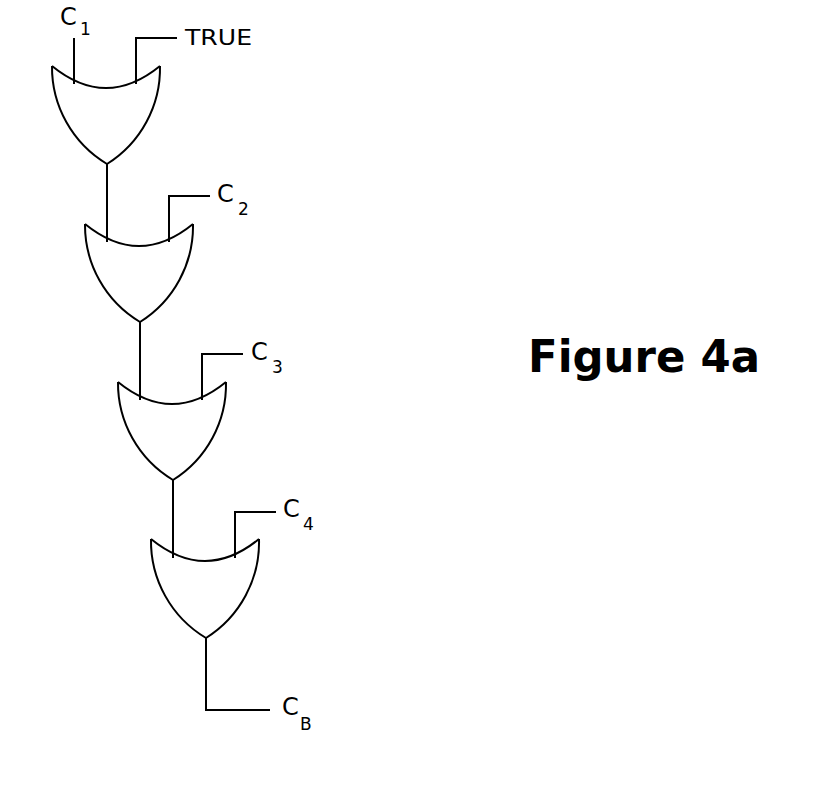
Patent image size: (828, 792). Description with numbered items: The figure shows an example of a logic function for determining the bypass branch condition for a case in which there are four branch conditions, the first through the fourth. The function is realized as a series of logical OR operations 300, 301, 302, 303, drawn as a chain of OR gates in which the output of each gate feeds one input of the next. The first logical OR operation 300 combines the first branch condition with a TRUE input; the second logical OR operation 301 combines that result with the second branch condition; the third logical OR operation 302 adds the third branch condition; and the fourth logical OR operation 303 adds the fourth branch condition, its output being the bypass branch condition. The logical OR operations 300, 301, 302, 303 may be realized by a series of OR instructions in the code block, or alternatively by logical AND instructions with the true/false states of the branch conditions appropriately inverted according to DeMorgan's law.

The logical OR operation 300 is at (157, 113).
The logical OR operation 301 is at (190, 271).
The logical OR operation 302 is at (223, 428).
The logical OR operation 303 is at (256, 586).